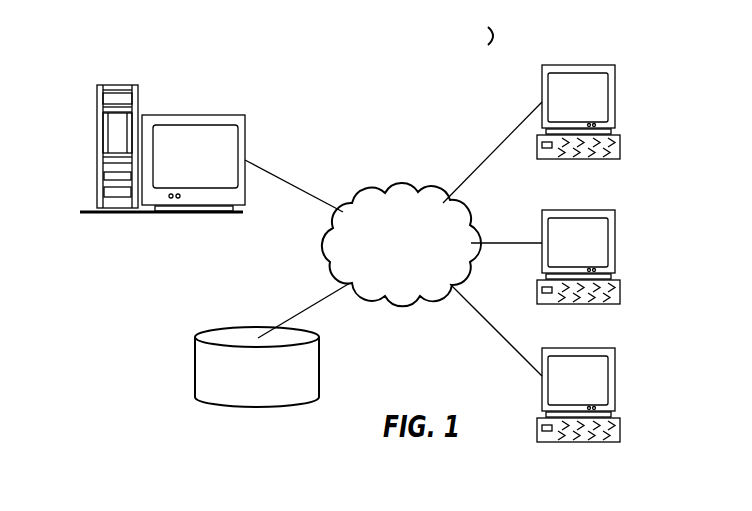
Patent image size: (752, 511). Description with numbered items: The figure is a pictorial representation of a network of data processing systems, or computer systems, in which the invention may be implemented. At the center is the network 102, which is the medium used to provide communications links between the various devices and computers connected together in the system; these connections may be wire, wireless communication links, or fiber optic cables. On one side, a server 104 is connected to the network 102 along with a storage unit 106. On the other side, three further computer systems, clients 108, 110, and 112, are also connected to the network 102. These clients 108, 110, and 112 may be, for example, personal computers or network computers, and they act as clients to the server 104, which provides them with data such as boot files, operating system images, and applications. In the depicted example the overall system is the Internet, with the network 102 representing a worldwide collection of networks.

The network 102 is at (375, 192).
The server 104 is at (97, 130).
The storage unit 106 is at (240, 407).
The client 108 is at (616, 100).
The client 110 is at (616, 243).
The client 112 is at (616, 380).